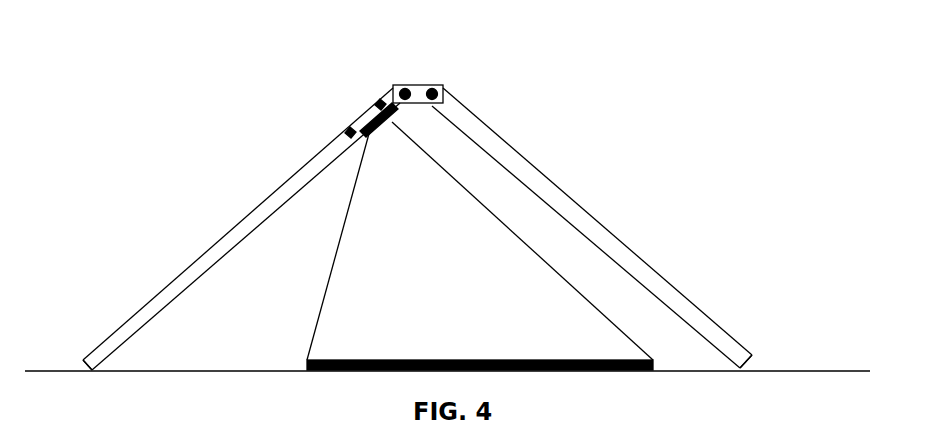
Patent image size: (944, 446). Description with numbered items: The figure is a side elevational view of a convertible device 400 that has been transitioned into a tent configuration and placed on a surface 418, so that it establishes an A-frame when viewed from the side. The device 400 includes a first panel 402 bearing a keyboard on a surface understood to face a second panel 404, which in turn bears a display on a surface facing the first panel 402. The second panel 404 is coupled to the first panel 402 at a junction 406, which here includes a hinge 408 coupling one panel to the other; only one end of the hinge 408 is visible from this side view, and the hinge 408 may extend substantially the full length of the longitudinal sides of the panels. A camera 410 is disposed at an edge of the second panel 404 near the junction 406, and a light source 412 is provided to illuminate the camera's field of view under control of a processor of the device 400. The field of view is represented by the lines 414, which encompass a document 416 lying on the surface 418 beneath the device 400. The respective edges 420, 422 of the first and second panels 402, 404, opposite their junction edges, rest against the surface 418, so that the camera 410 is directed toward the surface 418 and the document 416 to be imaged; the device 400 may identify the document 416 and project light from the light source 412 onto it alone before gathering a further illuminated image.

The convertible device 400 is at (573, 123).
The first panel 402 is at (590, 212).
The second panel 404 is at (292, 177).
The junction 406 is at (446, 77).
The hinge 408 is at (440, 90).
The camera 410 is at (348, 129).
The light source 412 is at (376, 103).
The lines 414 is at (346, 219).
The document 416 is at (506, 360).
The surface 418 is at (793, 369).
The edge of the first panel 420 is at (755, 360).
The edge of the second panel 422 is at (83, 360).